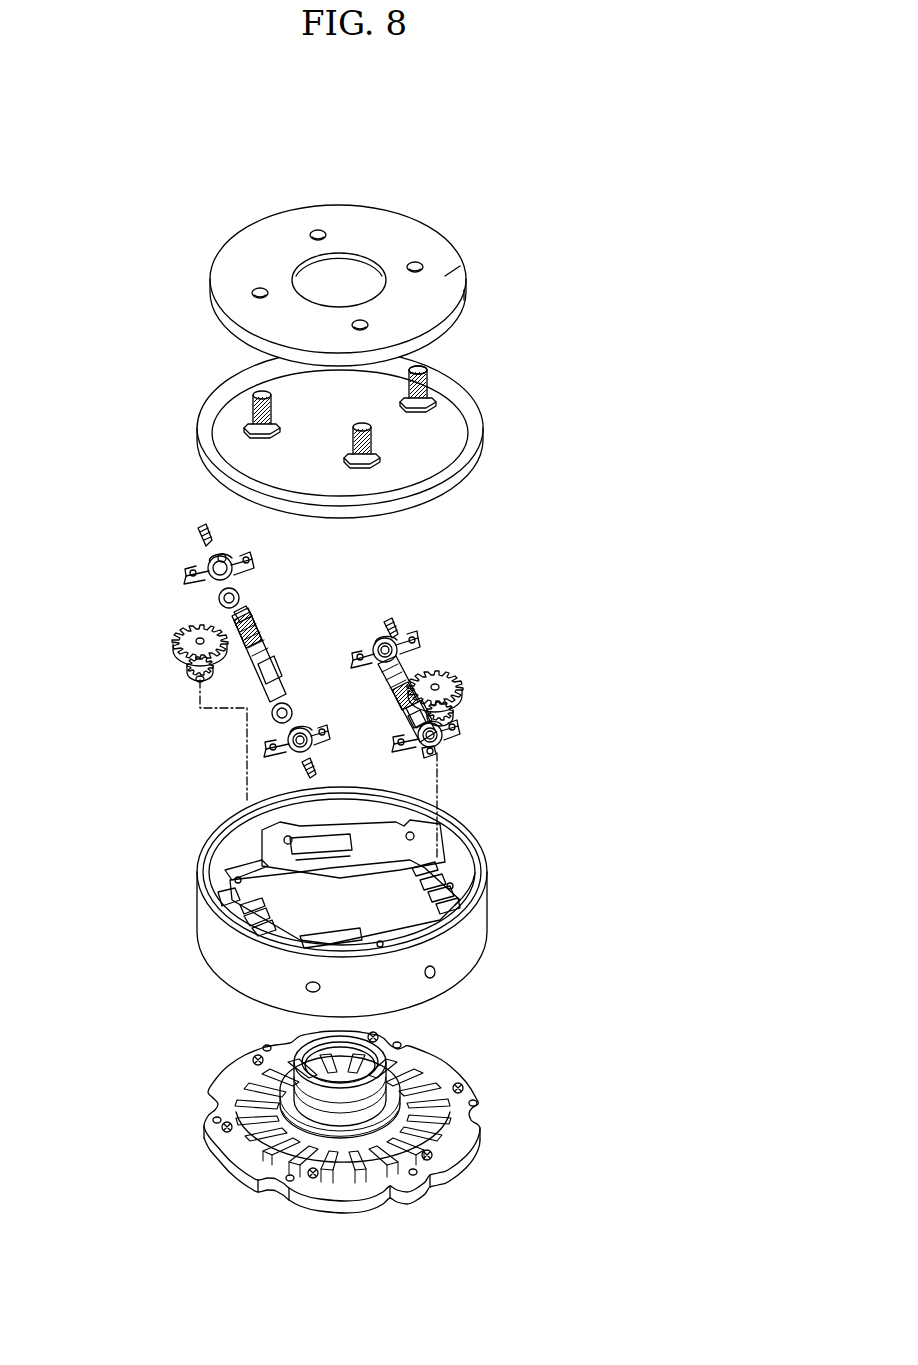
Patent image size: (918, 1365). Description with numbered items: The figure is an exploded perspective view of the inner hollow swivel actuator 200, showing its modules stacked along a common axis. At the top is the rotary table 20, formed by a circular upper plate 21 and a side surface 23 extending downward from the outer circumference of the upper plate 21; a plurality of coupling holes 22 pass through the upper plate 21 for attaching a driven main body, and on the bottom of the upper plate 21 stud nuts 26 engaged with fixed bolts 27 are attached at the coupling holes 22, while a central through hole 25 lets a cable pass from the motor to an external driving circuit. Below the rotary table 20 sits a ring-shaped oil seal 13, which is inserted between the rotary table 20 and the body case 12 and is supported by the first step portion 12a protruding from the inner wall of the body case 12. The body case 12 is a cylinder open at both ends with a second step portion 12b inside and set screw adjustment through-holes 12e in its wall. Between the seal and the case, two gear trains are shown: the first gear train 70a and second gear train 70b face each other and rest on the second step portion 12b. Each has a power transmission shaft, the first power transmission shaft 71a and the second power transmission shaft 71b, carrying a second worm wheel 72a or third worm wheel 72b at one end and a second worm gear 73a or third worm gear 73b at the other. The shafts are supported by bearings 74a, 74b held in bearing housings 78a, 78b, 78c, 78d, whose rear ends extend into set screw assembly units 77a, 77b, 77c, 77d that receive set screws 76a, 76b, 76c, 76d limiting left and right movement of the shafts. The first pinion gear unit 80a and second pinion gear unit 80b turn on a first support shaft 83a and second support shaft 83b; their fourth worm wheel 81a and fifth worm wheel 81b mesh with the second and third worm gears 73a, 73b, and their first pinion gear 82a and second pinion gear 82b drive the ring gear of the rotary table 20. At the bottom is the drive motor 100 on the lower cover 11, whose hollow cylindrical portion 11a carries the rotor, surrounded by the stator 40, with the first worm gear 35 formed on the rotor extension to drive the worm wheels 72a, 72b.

The inner hollow swivel actuator 200 is at (598, 164).
The rotary table 20 is at (370, 266).
The upper plate 21 is at (445, 276).
The coupling holes 22 is at (422, 264).
The side surface 23 is at (464, 296).
The central through hole 25 is at (300, 268).
The stud nuts 26 is at (450, 390).
The fixed bolts 27 is at (438, 365).
The ring-shaped oil seal 13 is at (473, 447).
The body case 12 is at (334, 913).
The first step portion 12a is at (447, 840).
The second step portion 12b is at (475, 873).
The set screw adjustment through-holes 12e is at (308, 990).
The drive motor 100 is at (468, 1052).
The lower cover 11 is at (453, 1170).
The hollow cylindrical portion 11a is at (460, 1088).
The first worm gear 35 is at (408, 1110).
The stator 40 is at (354, 1177).
The first gear train 70a is at (178, 699).
The second gear train 70b is at (442, 656).
The first power transmission shaft 71a is at (270, 678).
The second power transmission shaft 71b is at (380, 668).
The second worm wheel 72a is at (264, 654).
The third worm wheel 72b is at (392, 690).
The second worm gear 73a is at (258, 622).
The third worm gear 73b is at (400, 716).
The bearing 74a is at (274, 718).
The bearing 74b is at (218, 598).
The set screw 76a is at (276, 774).
The set screw 76b is at (198, 530).
The set screw 76c is at (424, 756).
The set screw 76d is at (396, 624).
The set screw assembly unit 77a is at (272, 756).
The set screw assembly unit 77b is at (228, 552).
The set screw assembly unit 77c is at (448, 748).
The set screw assembly unit 77d is at (376, 638).
The bearing housing 78a is at (270, 738).
The bearing housing 78b is at (200, 562).
The bearing housing 78c is at (458, 736).
The bearing housing 78d is at (398, 644).
The first pinion gear unit 80a is at (110, 614).
The second pinion gear unit 80b is at (524, 658).
The fourth worm wheel 81a is at (180, 664).
The fifth worm wheel 81b is at (456, 708).
The first pinion gear 82a is at (176, 645).
The second pinion gear 82b is at (462, 690).
The first support shaft 83a is at (190, 638).
The second support shaft 83b is at (444, 686).